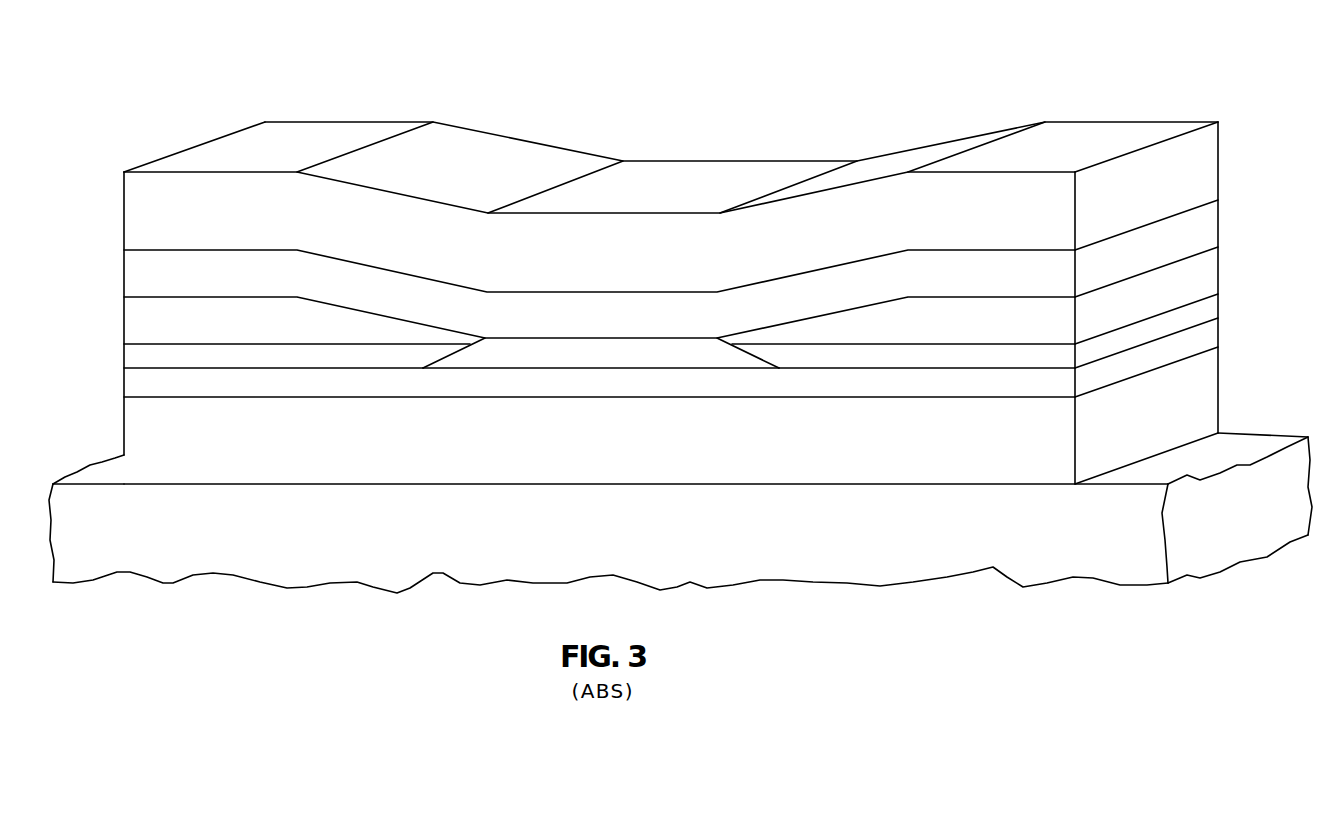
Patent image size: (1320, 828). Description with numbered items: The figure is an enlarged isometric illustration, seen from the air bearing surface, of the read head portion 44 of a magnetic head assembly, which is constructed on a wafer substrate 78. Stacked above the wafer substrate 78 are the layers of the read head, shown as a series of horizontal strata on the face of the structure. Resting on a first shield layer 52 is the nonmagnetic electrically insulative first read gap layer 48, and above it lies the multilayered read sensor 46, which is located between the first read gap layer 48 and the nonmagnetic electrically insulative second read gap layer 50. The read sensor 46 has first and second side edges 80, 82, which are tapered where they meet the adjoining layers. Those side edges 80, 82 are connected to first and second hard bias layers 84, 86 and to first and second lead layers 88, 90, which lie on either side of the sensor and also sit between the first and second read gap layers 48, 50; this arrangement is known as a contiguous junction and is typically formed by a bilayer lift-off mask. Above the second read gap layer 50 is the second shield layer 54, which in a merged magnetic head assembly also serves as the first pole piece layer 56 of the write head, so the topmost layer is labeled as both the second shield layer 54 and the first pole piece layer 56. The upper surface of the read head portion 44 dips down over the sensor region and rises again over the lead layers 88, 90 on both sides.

The read head portion 44 is at (738, 136).
The second shield layer 54 is at (671, 191).
The first pole piece layer 56 is at (203, 193).
The second read gap layer 50 is at (357, 278).
The read sensor 46 is at (518, 338).
The first read gap layer 48 is at (462, 385).
The first shield layer S1 52 is at (288, 465).
The wafer substrate 78 is at (520, 543).
The first side edge 80 is at (437, 354).
The second side edge 82 is at (770, 354).
The first hard bias layer 84 is at (172, 358).
The second hard bias layer 86 is at (1028, 360).
The first lead layer 88 is at (165, 317).
The second lead layer 90 is at (1027, 317).